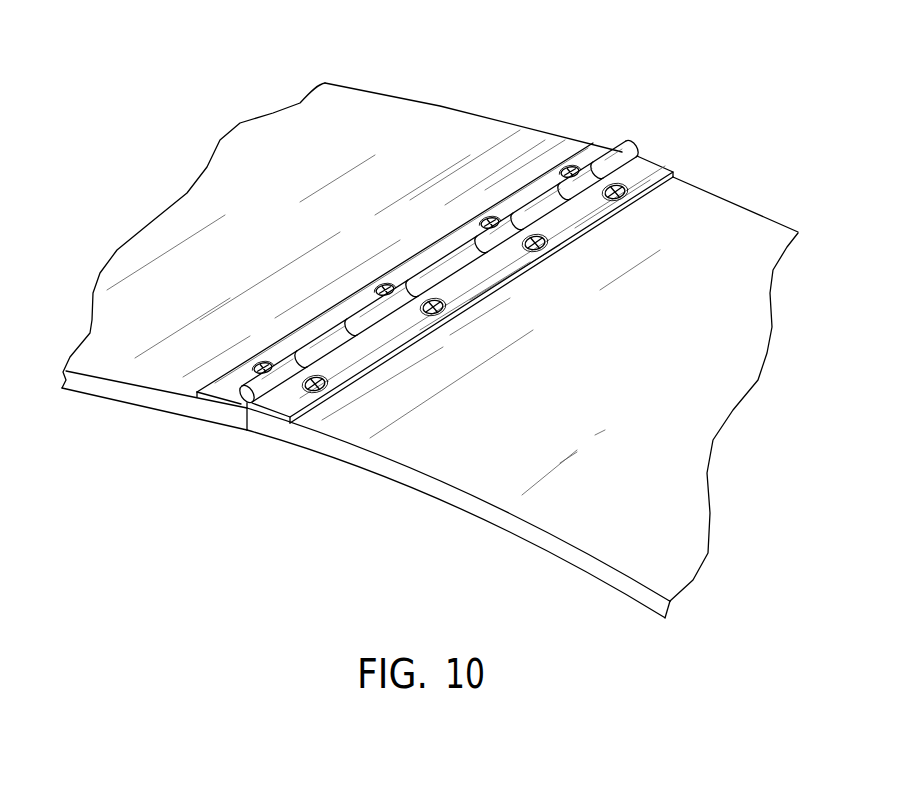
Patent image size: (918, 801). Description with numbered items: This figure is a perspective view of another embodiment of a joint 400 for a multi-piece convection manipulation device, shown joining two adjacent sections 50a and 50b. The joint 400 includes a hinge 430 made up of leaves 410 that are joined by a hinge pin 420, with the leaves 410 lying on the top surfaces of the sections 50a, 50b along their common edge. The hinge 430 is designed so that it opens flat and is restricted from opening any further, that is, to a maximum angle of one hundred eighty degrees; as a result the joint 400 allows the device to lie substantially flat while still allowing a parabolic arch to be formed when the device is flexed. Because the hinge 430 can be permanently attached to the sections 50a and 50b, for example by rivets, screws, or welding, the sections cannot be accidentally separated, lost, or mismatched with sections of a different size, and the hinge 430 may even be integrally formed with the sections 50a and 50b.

The section 50a is at (408, 90).
The section 50b is at (753, 198).
The joint 400 is at (448, 230).
The leaves 410 is at (328, 318).
The hinge pin 420 is at (442, 262).
The hinge 430 is at (563, 218).